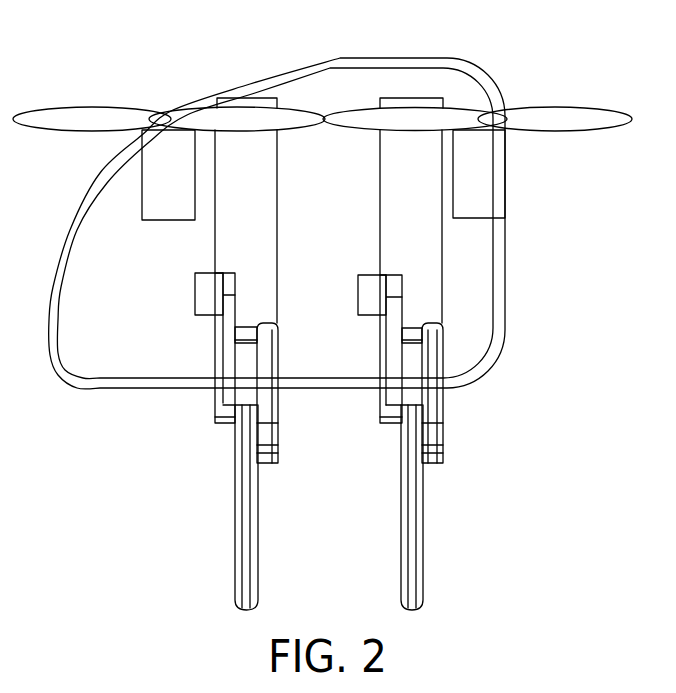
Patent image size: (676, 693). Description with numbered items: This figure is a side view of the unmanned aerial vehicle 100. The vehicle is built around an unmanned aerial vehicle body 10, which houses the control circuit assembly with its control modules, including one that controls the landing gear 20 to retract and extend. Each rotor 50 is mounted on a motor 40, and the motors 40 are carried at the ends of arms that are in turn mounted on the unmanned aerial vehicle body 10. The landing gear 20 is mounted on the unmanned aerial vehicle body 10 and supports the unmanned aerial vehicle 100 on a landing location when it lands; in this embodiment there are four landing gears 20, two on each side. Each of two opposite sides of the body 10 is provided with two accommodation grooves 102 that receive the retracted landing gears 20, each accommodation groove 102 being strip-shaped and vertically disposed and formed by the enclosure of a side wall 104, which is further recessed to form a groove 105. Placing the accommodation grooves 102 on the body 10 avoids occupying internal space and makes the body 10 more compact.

The unmanned aerial vehicle 100 is at (528, 60).
The unmanned aerial vehicle body 10 is at (330, 73).
The rotor 50 is at (557, 110).
The motor 40 is at (492, 207).
The side wall 104 is at (442, 245).
The accommodation groove 102 is at (430, 292).
The groove 105 is at (200, 315).
The landing gear 20 is at (437, 443).